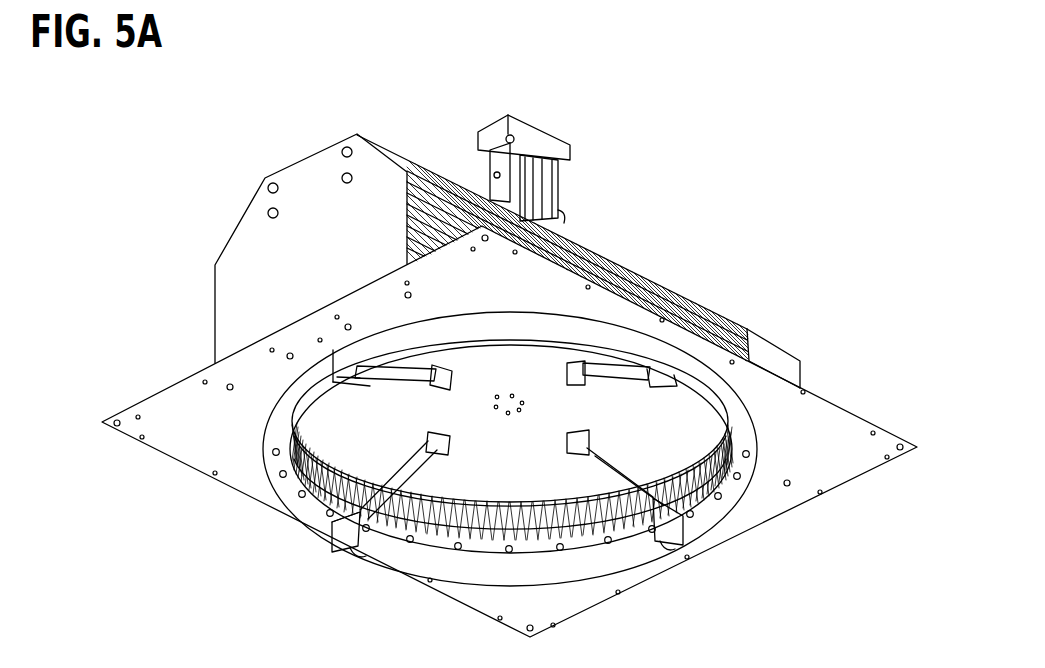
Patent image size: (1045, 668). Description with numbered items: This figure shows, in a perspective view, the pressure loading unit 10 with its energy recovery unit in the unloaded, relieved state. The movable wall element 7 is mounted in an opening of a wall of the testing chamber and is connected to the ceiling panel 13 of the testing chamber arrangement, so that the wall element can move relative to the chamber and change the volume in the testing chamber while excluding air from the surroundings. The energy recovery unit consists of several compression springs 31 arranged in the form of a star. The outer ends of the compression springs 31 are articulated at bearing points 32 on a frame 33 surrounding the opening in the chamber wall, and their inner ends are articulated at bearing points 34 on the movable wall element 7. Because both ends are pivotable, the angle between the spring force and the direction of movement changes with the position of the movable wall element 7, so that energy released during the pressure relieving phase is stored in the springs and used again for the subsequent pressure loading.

The movable wall element 7 is at (477, 488).
The rotary table device 10 is at (375, 577).
The ceiling panel 13 is at (828, 435).
The compression springs 31 is at (617, 477).
The bearing points 32 is at (673, 537).
The frame 33 is at (733, 500).
The bearing points 34 is at (578, 428).